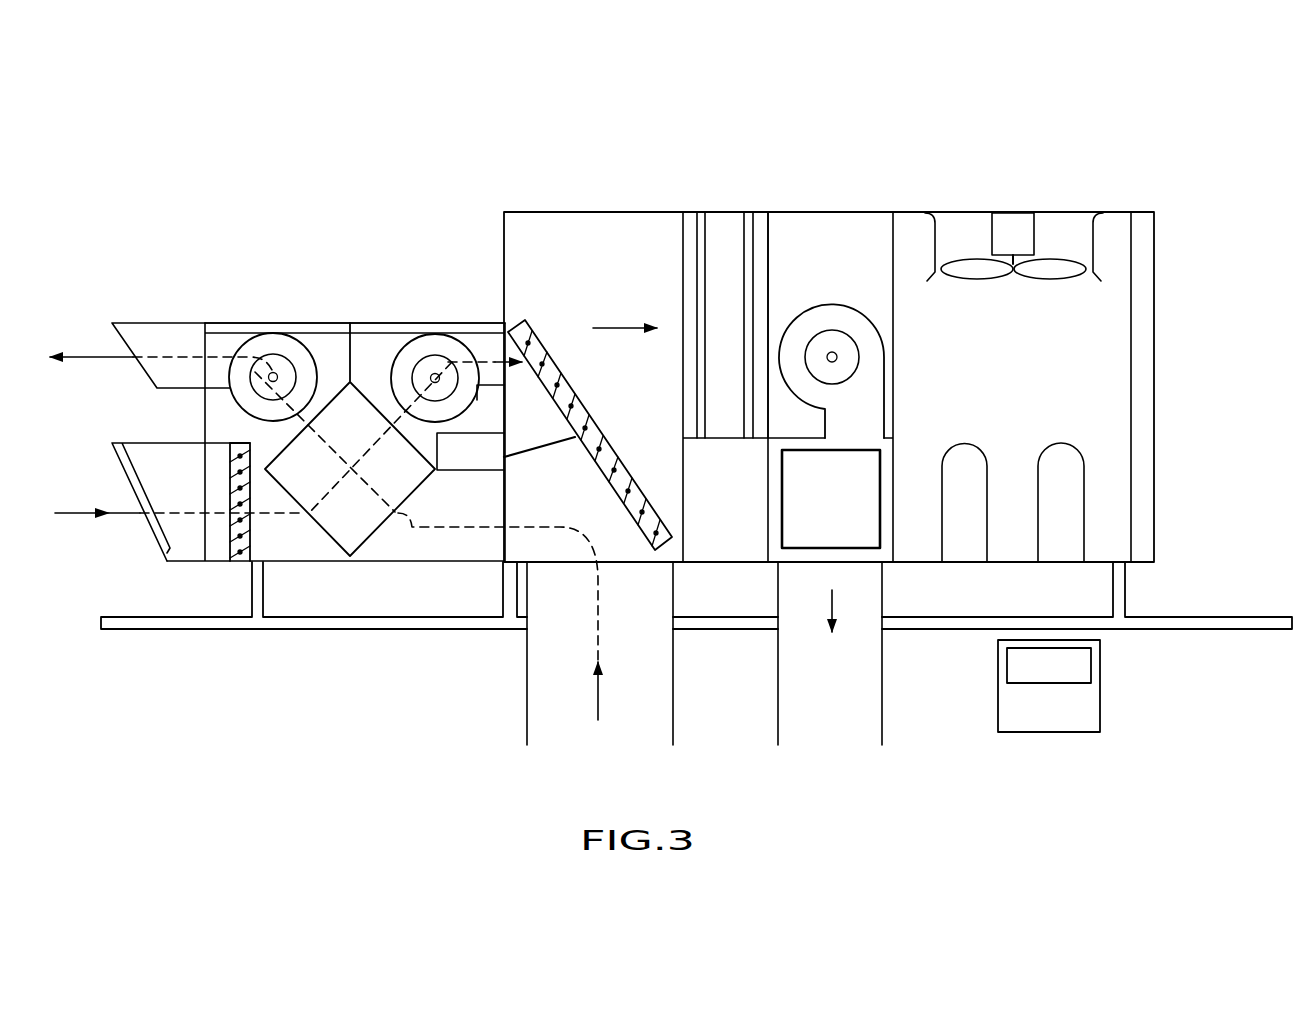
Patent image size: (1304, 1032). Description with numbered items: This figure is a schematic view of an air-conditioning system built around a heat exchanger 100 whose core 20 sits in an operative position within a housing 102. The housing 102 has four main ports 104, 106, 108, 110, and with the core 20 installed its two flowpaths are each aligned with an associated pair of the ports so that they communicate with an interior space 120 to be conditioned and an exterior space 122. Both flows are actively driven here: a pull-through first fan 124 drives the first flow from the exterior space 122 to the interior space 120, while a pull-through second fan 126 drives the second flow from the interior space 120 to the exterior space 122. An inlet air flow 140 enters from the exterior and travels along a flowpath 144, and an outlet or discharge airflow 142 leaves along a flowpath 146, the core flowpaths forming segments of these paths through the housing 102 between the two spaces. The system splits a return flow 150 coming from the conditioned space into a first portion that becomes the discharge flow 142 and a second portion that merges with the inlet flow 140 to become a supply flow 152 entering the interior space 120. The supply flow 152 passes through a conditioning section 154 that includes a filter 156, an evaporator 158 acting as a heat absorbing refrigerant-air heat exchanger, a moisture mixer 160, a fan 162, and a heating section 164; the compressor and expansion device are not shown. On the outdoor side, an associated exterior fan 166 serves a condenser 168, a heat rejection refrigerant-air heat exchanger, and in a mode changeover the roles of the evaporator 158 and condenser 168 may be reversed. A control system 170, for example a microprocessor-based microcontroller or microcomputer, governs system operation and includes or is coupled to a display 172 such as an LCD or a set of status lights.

The core 20 is at (369, 540).
The heat exchanger 100 is at (343, 302).
The housing 102 is at (392, 323).
The main port 104 is at (202, 544).
The main port 106 is at (522, 338).
The main port 108 is at (513, 514).
The main port 110 is at (200, 380).
The interior space 120 is at (747, 793).
The exterior space 122 is at (80, 448).
The first fan 124 is at (436, 362).
The second fan 126 is at (283, 350).
The inlet air flow 140 is at (73, 518).
The outlet/discharge airflow 142 is at (83, 352).
The flowpath 144 is at (273, 514).
The flowpath 146 is at (183, 355).
The return flow 150 is at (598, 696).
The supply flow 152 is at (832, 610).
The conditioning section 154 is at (656, 188).
The filter 156 is at (690, 216).
The evaporator 158 is at (732, 220).
The moisture mixer 160 is at (764, 228).
The fan 162 is at (845, 302).
The heating section 164 is at (868, 462).
The exterior fan 166 is at (1071, 232).
The condenser 168 is at (1094, 432).
The control system 170 is at (1068, 723).
The display 172 is at (1068, 682).